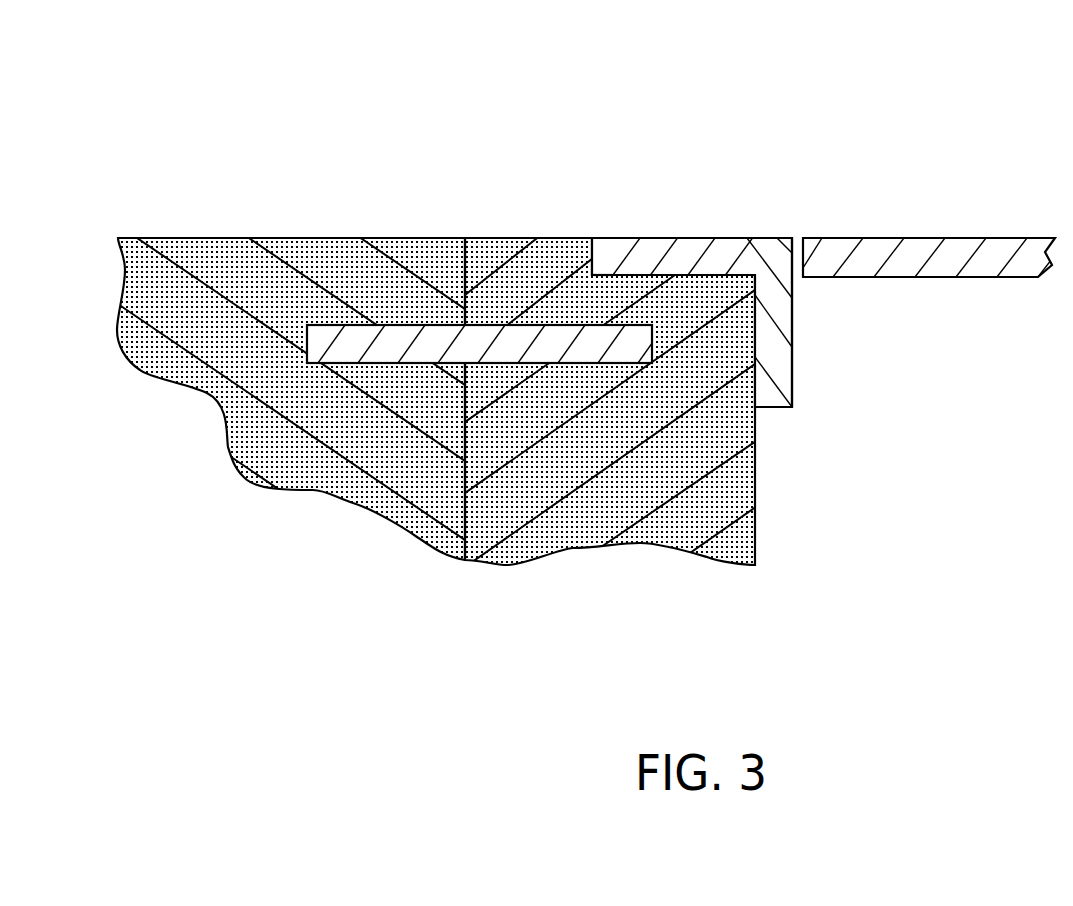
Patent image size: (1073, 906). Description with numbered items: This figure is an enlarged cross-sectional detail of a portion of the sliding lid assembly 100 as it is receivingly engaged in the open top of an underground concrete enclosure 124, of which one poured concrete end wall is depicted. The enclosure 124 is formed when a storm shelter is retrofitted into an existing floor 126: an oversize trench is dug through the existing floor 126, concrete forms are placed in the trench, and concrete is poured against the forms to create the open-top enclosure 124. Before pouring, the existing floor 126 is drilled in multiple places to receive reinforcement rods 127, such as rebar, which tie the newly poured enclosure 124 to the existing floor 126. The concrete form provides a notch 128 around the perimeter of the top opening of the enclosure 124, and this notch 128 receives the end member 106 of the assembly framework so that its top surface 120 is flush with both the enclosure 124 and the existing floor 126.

The sliding lid assembly 100 is at (897, 118).
The end member 106 is at (793, 342).
The top surface 120 is at (735, 238).
The underground concrete enclosure 124 is at (525, 238).
The existing floor 126 is at (250, 238).
The reinforcement rods 127 is at (390, 325).
The notch 128 is at (618, 253).